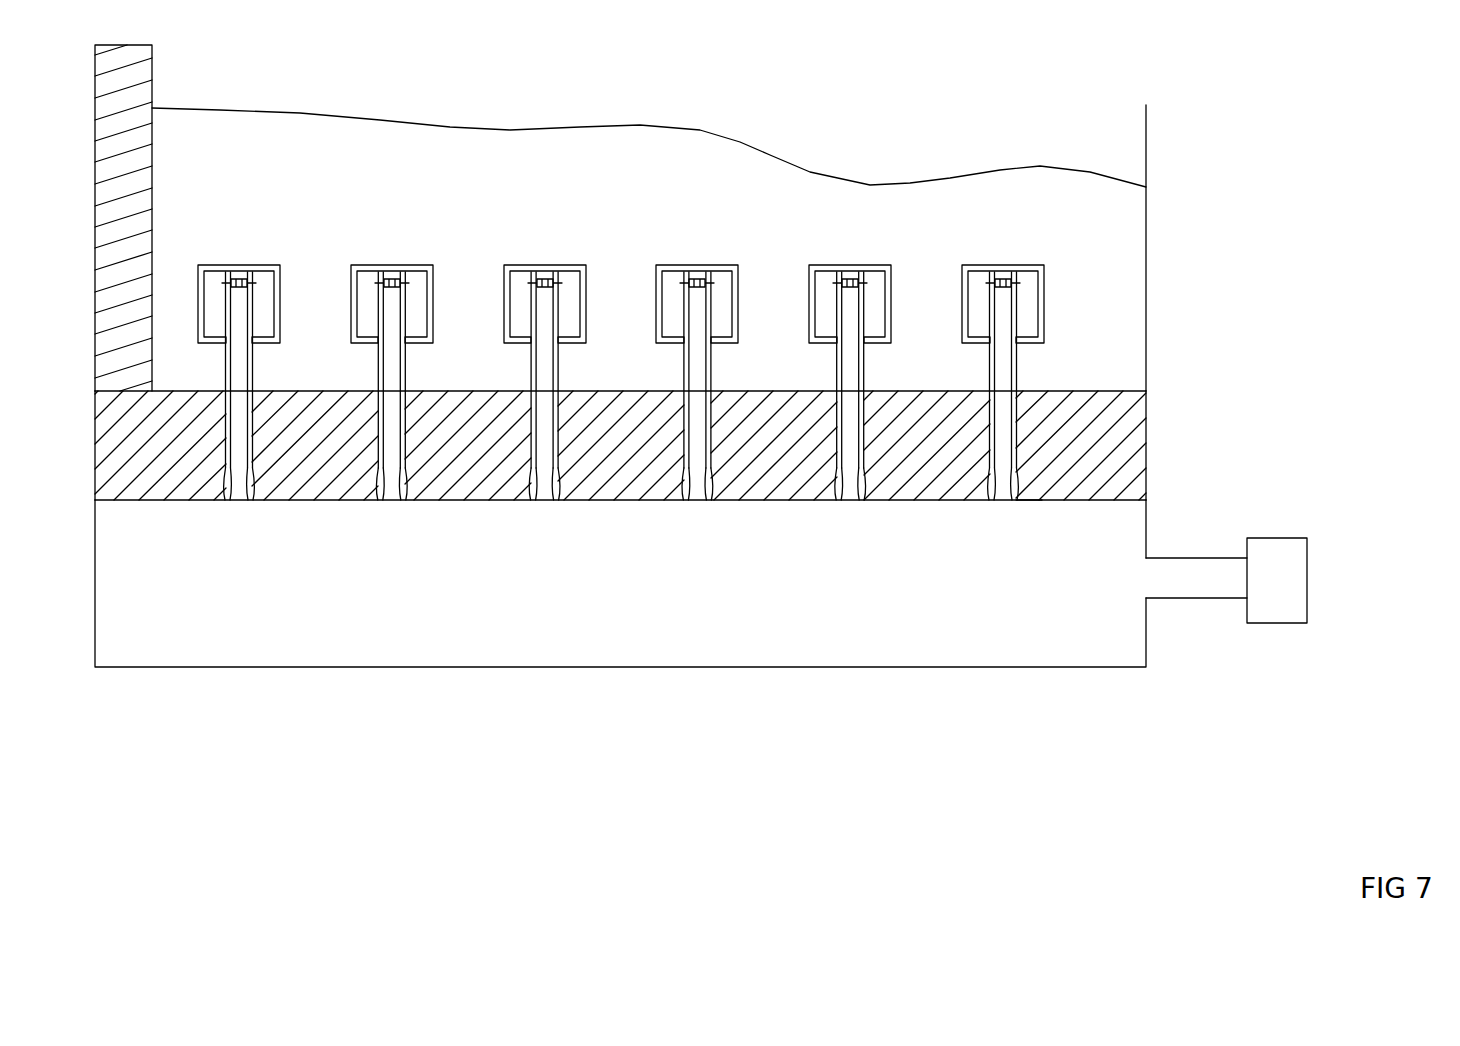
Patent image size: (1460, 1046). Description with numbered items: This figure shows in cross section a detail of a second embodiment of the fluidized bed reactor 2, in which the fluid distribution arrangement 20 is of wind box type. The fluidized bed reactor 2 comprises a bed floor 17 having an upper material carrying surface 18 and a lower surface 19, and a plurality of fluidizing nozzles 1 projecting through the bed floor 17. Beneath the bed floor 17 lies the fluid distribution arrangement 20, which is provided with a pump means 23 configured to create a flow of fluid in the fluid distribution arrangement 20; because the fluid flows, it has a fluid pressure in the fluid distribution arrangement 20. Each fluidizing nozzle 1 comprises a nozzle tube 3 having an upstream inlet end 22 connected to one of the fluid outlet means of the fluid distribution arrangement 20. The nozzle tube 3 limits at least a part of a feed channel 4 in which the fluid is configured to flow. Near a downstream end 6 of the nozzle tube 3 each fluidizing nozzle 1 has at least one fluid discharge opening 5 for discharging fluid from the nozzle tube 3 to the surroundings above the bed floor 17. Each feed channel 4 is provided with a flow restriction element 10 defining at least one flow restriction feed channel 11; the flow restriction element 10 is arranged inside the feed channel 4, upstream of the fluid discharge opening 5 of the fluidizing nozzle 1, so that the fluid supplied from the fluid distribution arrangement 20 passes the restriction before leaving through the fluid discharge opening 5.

The fluidizing nozzle 1 is at (1034, 392).
The fluidized bed reactor 2 is at (1210, 218).
The nozzle tube 3 is at (1018, 378).
The feed channel 4 is at (1002, 357).
The fluid discharge opening 5 is at (1042, 287).
The downstream end 6 is at (1043, 273).
The flow restriction element 10 is at (686, 510).
The flow restriction feed channel 11 is at (1002, 488).
The bed floor 17 is at (1118, 415).
The upper material carrying surface 18 is at (777, 379).
The lower surface 19 is at (800, 515).
The fluid distribution arrangement 20 is at (1060, 667).
The upstream inlet end 22 is at (1037, 516).
The pump means 23 is at (1226, 580).